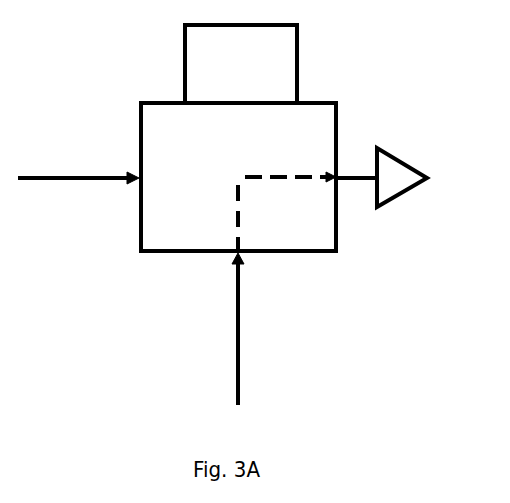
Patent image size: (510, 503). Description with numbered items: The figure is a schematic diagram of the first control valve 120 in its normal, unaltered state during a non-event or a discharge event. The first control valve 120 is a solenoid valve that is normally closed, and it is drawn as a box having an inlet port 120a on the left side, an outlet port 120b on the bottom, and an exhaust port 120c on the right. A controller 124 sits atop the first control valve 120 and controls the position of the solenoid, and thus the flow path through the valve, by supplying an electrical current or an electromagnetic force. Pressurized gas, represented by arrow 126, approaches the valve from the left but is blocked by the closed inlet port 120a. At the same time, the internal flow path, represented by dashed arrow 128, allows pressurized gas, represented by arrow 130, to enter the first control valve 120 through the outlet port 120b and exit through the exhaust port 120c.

The first control valve 120 is at (323, 100).
The controller 124 is at (241, 64).
The arrow representing pressurized gas 126 is at (38, 179).
The inlet port 120a is at (138, 172).
The outlet port 120b is at (243, 255).
The exhaust port 120c is at (383, 150).
The arrow representing flow path 128 is at (235, 218).
The arrow representing pressurized gas 130 is at (240, 383).